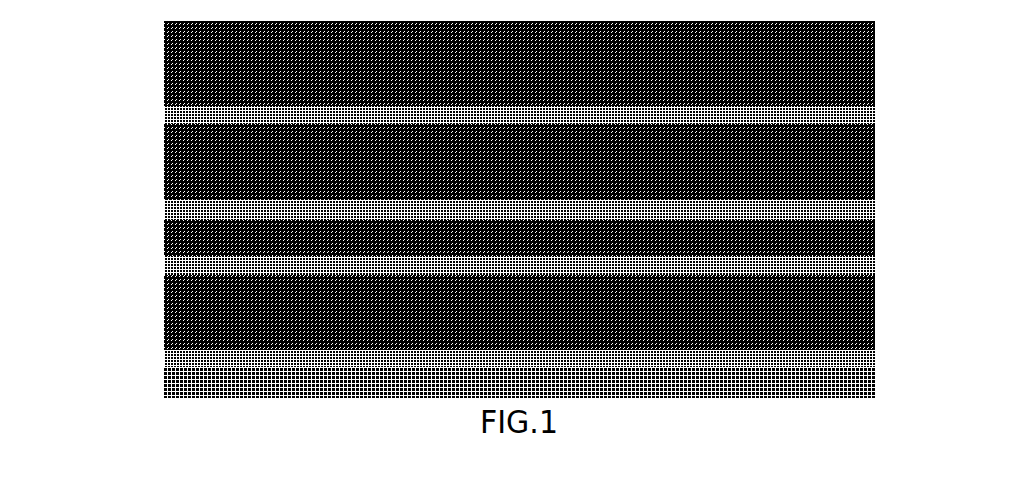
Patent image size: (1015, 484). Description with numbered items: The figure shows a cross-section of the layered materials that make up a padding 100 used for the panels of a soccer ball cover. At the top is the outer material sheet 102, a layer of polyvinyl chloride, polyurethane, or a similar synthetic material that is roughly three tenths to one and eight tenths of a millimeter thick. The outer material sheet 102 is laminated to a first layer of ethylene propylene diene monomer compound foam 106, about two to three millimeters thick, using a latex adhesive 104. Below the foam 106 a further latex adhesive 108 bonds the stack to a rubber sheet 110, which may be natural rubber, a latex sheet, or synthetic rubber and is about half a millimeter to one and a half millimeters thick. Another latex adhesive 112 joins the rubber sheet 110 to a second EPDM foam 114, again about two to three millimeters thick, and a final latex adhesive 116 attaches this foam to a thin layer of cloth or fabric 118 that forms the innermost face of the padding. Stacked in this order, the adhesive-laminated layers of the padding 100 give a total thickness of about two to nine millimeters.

The padding 100 is at (513, 226).
The outer material sheet 102 is at (163, 64).
The adhesive 104 is at (163, 115).
The EPDM compound foam 106 is at (163, 162).
The adhesive 108 is at (163, 209).
The rubber sheet 110 is at (163, 237).
The adhesive 112 is at (163, 264).
The EPDM foam 114 is at (163, 311).
The adhesive 116 is at (163, 358).
The fabric 118 is at (163, 381).